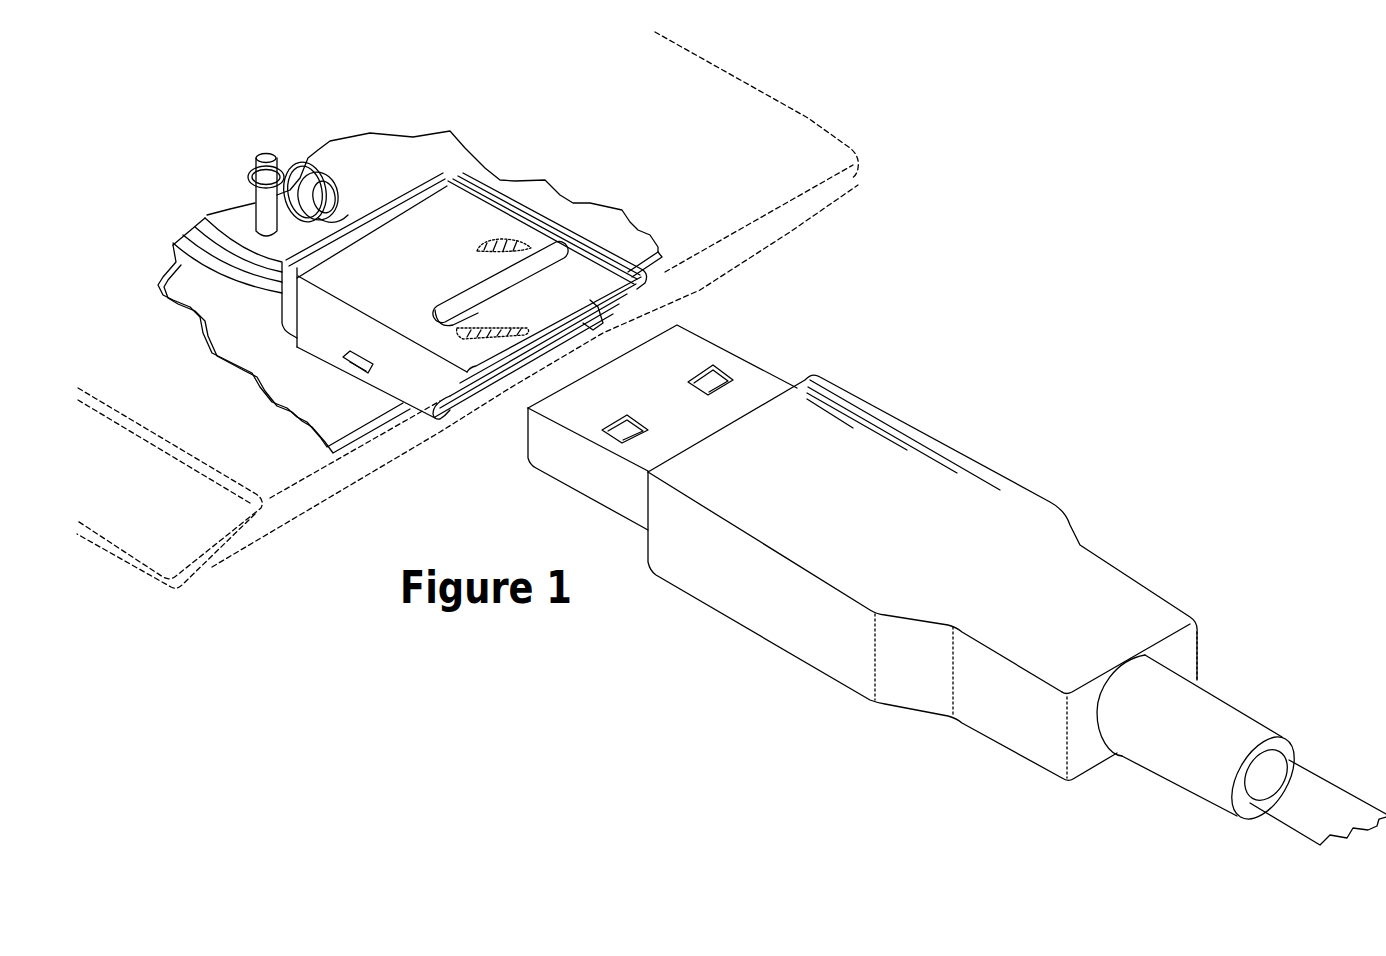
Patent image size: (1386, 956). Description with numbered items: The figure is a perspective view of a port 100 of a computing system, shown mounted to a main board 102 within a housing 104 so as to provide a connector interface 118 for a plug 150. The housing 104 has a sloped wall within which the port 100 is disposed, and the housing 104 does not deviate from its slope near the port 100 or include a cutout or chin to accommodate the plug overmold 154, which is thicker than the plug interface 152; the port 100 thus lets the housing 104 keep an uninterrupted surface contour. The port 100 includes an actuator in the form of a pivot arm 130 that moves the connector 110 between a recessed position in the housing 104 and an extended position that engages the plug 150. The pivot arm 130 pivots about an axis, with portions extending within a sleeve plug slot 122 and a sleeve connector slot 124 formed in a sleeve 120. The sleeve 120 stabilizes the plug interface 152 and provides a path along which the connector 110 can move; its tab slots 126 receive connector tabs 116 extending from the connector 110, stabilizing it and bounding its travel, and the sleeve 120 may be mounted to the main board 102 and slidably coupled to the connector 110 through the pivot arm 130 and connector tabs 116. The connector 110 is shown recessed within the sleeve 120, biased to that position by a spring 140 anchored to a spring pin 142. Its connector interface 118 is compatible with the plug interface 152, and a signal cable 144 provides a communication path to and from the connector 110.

The port 100 is at (562, 222).
The main board 102 is at (445, 147).
The housing 104 is at (811, 121).
The connector 110 is at (404, 200).
The connector tabs 116 is at (343, 359).
The connector interface 118 is at (492, 375).
The sleeve 120 is at (508, 195).
The sleeve plug slot 122 is at (493, 251).
The sleeve connector slot 124 is at (505, 326).
The tab slots 126 is at (380, 398).
The pivot arm 130 is at (458, 296).
The spring 140 is at (300, 158).
The spring pin 142 is at (265, 152).
The signal cable 144 is at (178, 253).
The plug 150 is at (992, 448).
The plug interface 152 is at (743, 360).
The plug overmold 154 is at (928, 433).